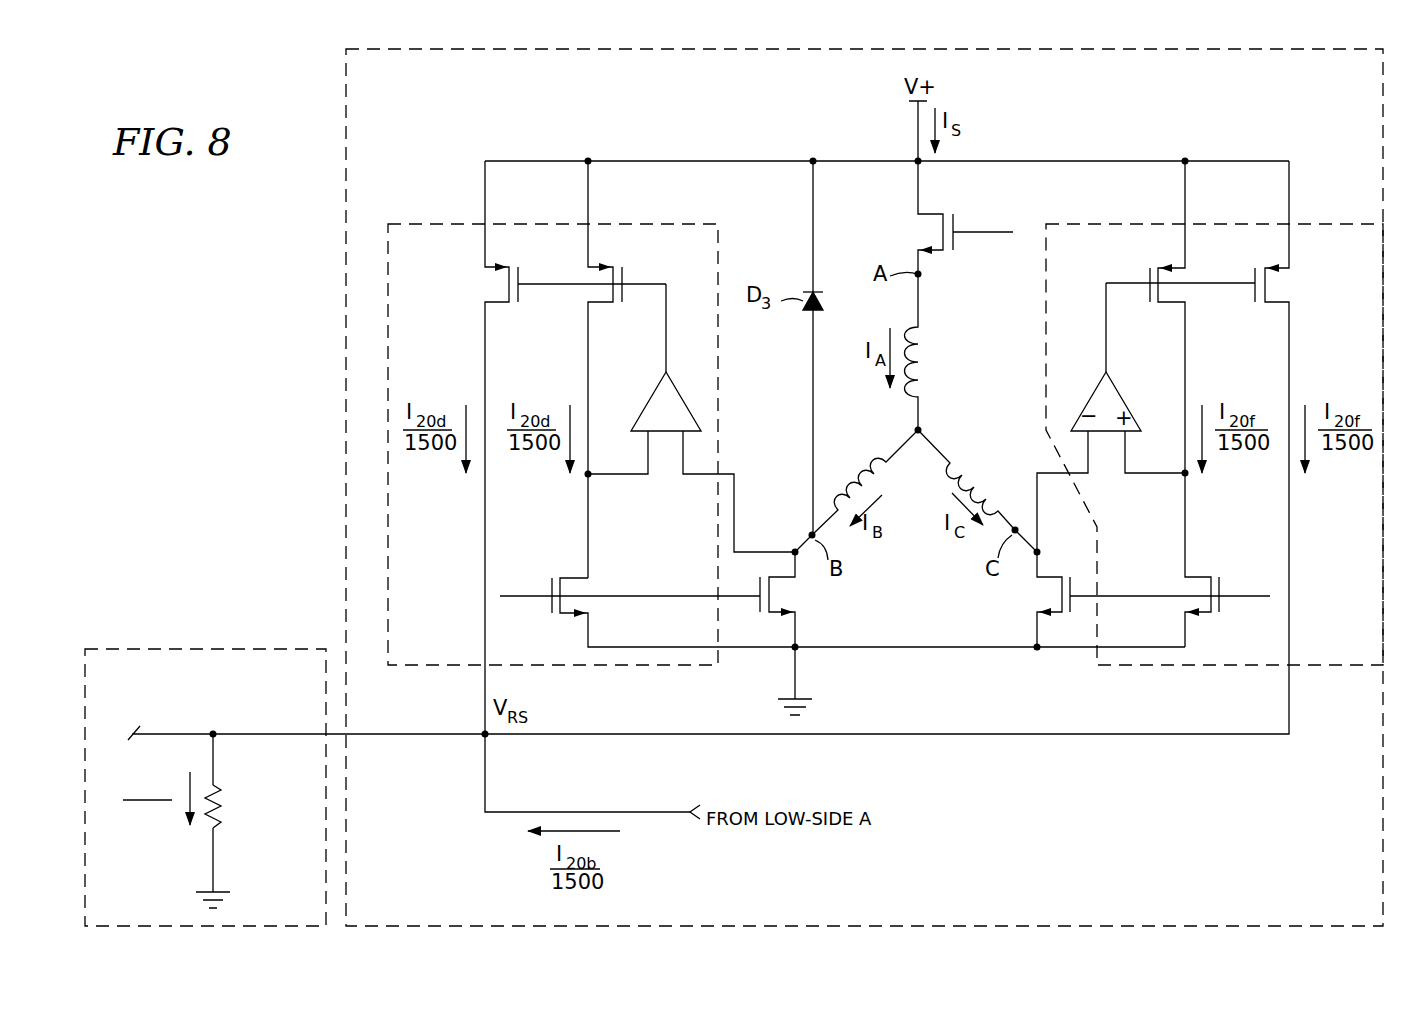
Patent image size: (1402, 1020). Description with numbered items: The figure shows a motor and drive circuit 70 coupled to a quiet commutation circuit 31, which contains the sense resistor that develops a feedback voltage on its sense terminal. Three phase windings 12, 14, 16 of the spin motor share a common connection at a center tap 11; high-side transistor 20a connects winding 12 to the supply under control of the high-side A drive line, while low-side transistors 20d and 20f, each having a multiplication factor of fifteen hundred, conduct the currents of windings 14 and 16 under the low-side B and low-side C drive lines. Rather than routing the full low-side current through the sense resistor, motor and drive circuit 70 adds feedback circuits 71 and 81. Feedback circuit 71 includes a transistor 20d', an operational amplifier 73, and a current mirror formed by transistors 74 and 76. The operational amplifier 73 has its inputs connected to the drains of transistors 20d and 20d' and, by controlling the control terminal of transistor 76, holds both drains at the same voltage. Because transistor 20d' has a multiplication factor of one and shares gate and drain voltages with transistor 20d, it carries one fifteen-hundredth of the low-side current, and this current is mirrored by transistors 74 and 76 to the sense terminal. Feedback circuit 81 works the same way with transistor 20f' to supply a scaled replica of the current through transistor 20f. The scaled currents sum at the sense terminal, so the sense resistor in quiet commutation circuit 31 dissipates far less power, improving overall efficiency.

The motor and drive circuit 70 is at (346, 120).
The feedback circuit 71 is at (434, 288).
The feedback circuit 81 is at (1358, 294).
The quiet commutation circuit 31 is at (139, 701).
The transistor 74 is at (518, 272).
The transistor 76 is at (622, 272).
The operational amplifier 73 is at (648, 398).
The high-side transistor 20a is at (943, 232).
The low-side transistor 20d is at (816, 633).
The transistor 20d' is at (842, 607).
The low-side transistor 20f is at (1111, 599).
The transistor 20f' is at (1197, 560).
The phase winding 12 is at (921, 338).
The phase winding 14 is at (882, 468).
The phase winding 16 is at (965, 478).
The center tap 11 is at (922, 432).